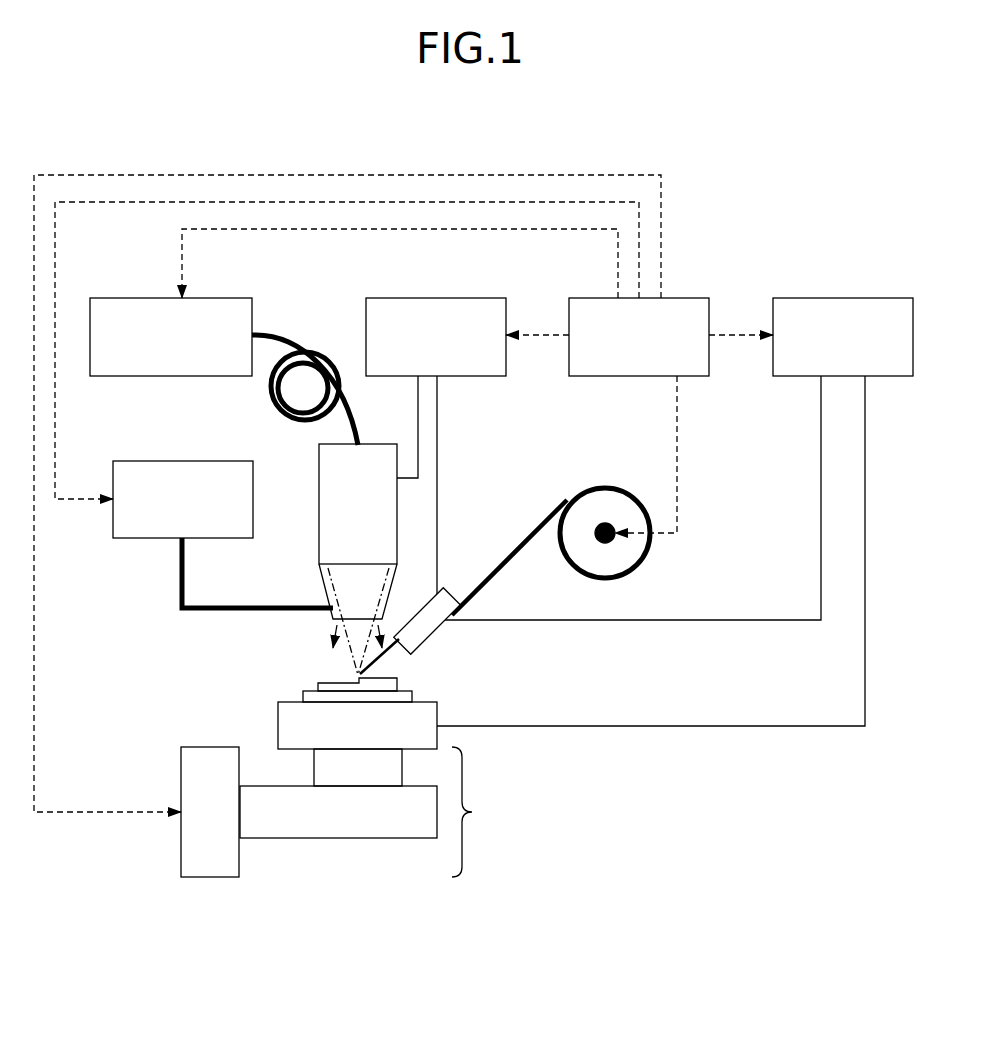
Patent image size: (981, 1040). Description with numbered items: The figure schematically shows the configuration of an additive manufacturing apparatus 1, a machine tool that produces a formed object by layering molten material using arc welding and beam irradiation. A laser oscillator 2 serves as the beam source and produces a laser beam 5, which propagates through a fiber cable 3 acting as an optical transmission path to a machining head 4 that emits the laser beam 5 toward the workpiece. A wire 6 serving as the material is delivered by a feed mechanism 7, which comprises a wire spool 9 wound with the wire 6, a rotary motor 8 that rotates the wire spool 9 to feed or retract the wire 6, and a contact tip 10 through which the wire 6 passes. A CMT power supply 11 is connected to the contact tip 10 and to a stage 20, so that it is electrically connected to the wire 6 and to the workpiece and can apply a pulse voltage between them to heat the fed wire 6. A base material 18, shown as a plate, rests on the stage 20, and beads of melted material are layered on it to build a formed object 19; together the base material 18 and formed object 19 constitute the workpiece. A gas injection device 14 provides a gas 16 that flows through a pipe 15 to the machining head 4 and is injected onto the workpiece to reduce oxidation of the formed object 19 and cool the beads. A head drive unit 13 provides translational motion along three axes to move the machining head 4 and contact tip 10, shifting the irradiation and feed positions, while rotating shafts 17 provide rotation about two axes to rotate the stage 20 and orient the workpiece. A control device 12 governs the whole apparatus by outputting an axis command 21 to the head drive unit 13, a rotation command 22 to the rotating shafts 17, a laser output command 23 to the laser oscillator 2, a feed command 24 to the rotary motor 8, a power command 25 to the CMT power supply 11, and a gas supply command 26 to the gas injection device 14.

The additive manufacturing apparatus 1 is at (693, 162).
The laser oscillator 2 is at (205, 283).
The fiber cable 3 is at (289, 343).
The machining head 4 is at (385, 444).
The laser beam 5 is at (358, 655).
The wire 6 is at (386, 660).
The feed mechanism 7 is at (526, 499).
The rotary motor 8 is at (612, 541).
The wire spool 9 is at (606, 500).
The contact tip 10 is at (447, 590).
The CMT power supply 11 is at (864, 298).
The control device 12 is at (679, 298).
The head drive unit 13 is at (458, 283).
The gas injection device 14 is at (206, 446).
The pipe 15 is at (275, 605).
The gas 16 is at (340, 627).
The rotating shafts 17 is at (346, 812).
The base material 18 is at (414, 698).
The formed object 19 is at (398, 686).
The stage 20 is at (278, 728).
The axis command 21 is at (526, 334).
The rotation command 22 is at (107, 812).
The laser output command 23 is at (180, 257).
The feed command 24 is at (678, 447).
The power command 25 is at (733, 334).
The gas supply command 26 is at (80, 504).